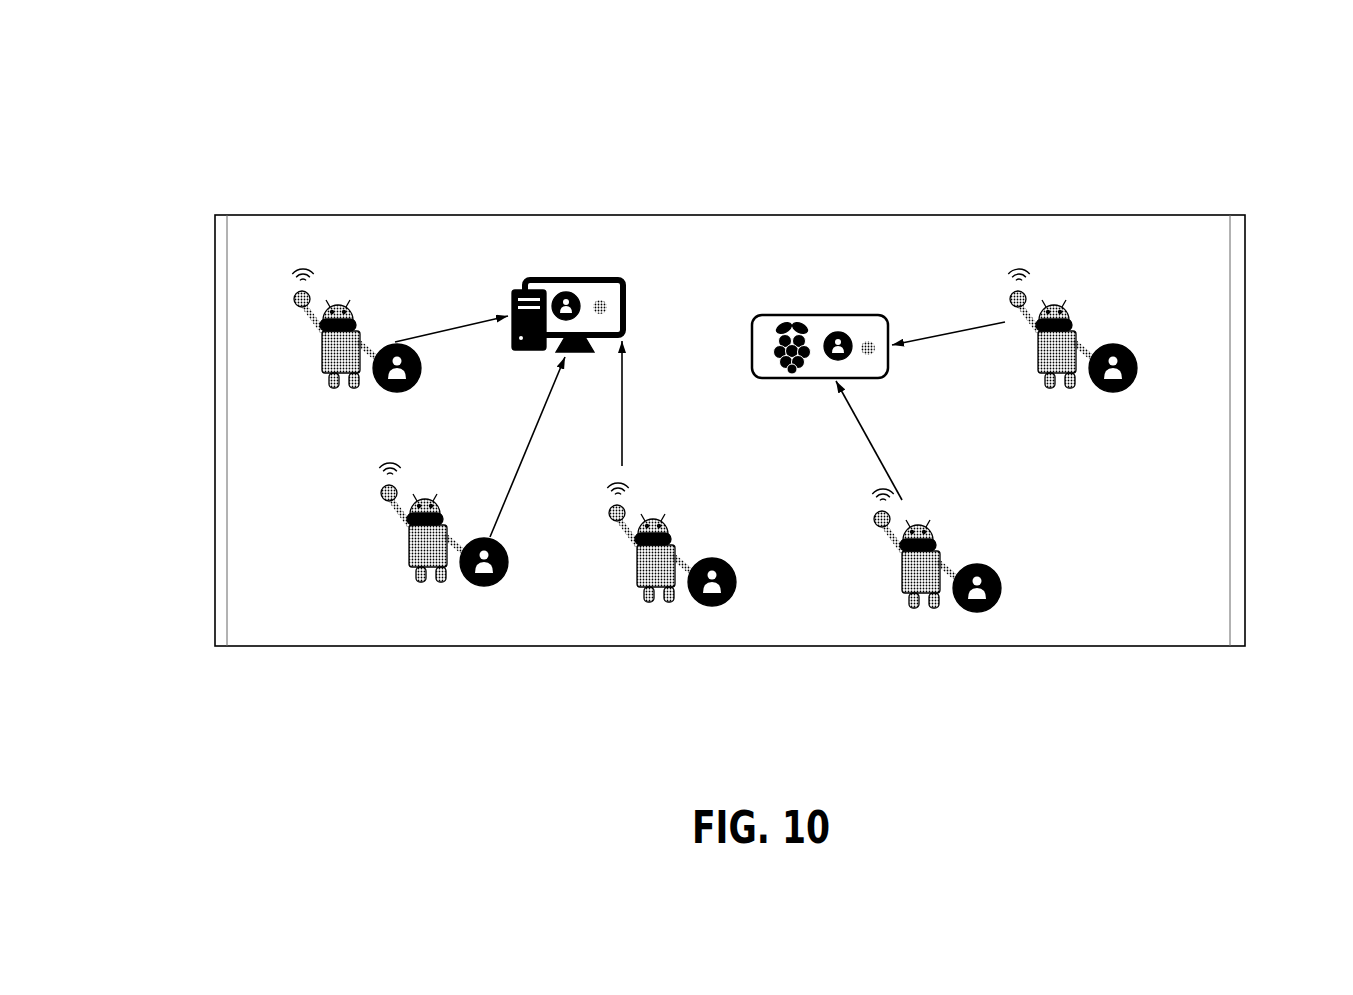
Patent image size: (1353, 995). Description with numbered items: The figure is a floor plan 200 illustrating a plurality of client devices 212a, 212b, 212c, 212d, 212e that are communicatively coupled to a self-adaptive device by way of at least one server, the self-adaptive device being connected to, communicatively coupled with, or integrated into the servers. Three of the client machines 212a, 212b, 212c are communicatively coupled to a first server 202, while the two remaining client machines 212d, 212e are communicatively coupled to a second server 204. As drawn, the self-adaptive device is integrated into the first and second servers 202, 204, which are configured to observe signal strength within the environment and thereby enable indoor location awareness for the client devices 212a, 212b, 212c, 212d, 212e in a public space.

The floor plan 200 is at (1145, 147).
The first server 202 is at (575, 267).
The second server 204 is at (842, 277).
The client device 212a is at (302, 373).
The client device 212b is at (423, 598).
The client device 212c is at (667, 598).
The client device 212d is at (978, 618).
The client device 212e is at (1176, 364).